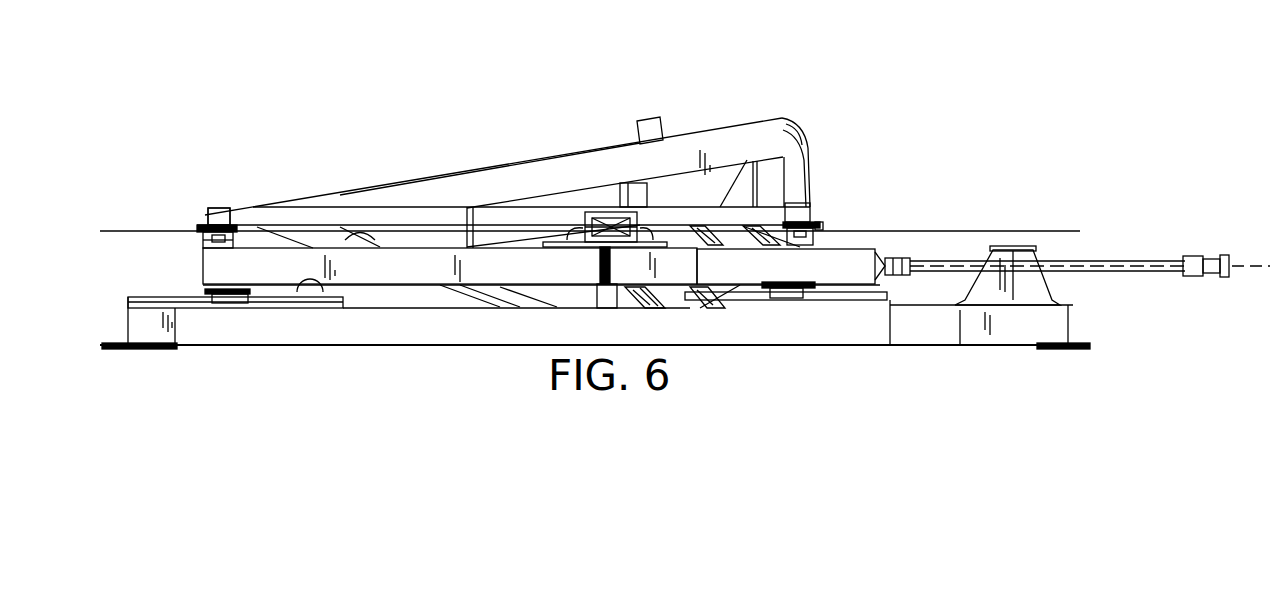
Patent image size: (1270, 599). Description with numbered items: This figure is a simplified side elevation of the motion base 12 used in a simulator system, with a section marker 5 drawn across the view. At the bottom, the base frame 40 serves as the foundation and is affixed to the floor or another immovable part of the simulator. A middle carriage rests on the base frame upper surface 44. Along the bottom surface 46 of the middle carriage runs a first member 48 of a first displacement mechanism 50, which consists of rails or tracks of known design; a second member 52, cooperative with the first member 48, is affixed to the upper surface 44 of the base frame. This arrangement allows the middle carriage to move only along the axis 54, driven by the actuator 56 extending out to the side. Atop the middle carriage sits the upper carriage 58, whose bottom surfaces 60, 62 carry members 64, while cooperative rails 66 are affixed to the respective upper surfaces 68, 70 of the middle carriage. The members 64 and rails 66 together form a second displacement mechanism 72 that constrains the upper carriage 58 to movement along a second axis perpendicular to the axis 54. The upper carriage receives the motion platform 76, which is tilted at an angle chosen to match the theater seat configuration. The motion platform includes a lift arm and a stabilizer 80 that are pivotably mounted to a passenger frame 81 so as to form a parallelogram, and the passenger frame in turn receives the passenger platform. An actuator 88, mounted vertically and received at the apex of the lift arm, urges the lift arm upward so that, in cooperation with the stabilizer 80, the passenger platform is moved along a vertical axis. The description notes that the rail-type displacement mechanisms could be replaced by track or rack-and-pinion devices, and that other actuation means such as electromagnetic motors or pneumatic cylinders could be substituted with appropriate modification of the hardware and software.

The section line 5- 5 is at (98, 305).
The motion base 12 is at (822, 116).
The base frame 40 is at (388, 346).
The base frame upper surface 44 is at (570, 300).
The bottom surface 46 is at (353, 288).
The first member 48 is at (235, 305).
The first displacement mechanism 50 is at (197, 290).
The second member 52 is at (140, 296).
The axis 54 is at (1222, 262).
The actuator 56 is at (1128, 260).
The upper carriage 58 is at (443, 207).
The bottom surface 60 is at (208, 222).
The bottom surface 62 is at (822, 226).
The members 64 is at (233, 223).
The cooperative rails 66 is at (222, 243).
The upper surface 68 is at (214, 240).
The upper surface 70 is at (797, 243).
The second displacement mechanism 72 is at (205, 200).
The motion platform 76 is at (596, 108).
The stabilizer 80 is at (377, 238).
The passenger frame 81 is at (718, 135).
The actuator 88 is at (648, 197).